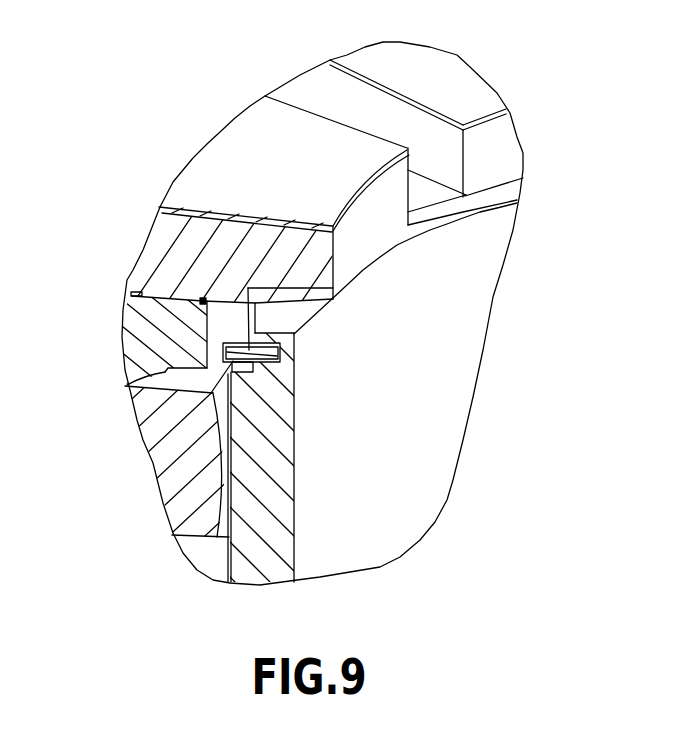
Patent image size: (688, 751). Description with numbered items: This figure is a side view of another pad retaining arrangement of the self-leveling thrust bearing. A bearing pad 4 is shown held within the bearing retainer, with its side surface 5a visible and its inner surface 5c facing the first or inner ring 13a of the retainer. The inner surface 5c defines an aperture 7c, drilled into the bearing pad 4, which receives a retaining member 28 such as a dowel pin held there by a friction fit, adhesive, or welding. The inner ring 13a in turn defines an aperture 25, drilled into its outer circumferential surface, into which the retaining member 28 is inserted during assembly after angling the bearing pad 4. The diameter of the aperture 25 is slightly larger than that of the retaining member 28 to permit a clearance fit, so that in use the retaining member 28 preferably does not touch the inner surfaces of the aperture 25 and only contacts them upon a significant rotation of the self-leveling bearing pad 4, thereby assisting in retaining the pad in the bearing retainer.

The bearing pad 4 is at (210, 152).
The side surface 5a is at (341, 80).
The inner surface 5c is at (503, 147).
The aperture 7c is at (214, 393).
The inner ring 13a is at (285, 318).
The retaining member 28 is at (280, 354).
The aperture 25 is at (250, 372).